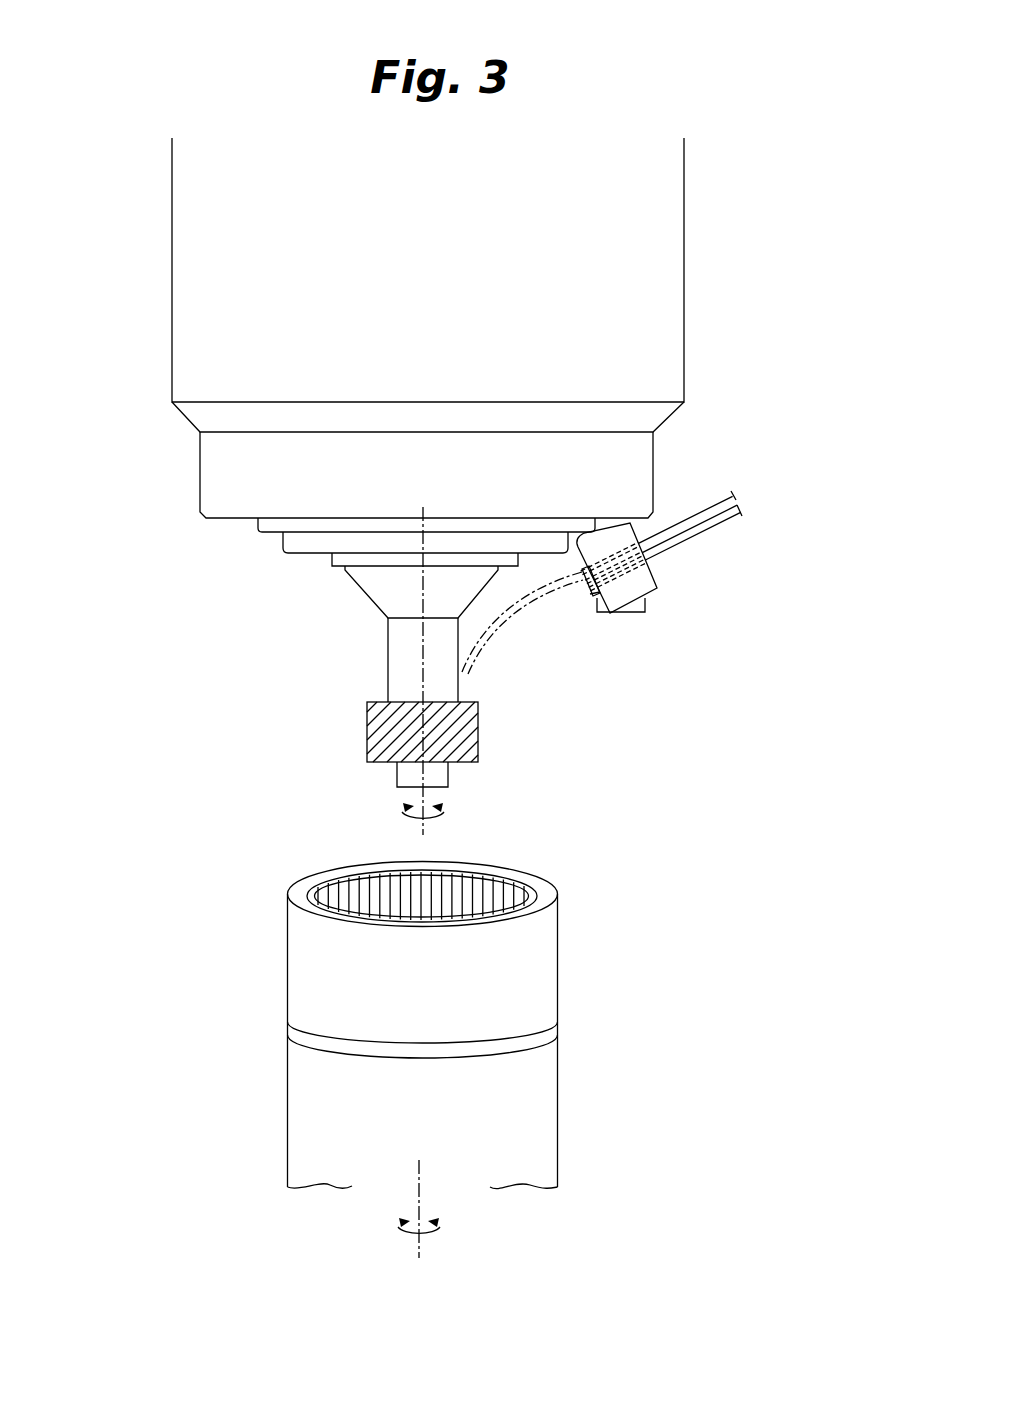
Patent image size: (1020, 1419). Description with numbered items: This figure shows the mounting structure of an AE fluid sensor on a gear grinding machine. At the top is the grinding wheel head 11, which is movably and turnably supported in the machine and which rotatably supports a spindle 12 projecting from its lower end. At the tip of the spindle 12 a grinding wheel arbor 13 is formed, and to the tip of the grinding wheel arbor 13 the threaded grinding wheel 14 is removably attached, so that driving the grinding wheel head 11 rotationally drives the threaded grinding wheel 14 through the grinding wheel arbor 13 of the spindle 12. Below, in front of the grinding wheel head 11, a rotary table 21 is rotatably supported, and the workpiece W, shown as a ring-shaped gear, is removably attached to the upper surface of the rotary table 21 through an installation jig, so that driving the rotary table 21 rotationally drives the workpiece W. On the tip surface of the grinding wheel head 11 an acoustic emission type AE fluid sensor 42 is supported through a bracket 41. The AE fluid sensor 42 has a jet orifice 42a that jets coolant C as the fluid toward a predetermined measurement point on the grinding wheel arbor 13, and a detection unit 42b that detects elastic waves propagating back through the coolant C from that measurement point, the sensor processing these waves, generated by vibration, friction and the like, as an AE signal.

The grinding wheel head 11 is at (200, 480).
The spindle 12 is at (283, 546).
The grinding wheel arbor 13 is at (388, 661).
The threaded grinding wheel 14 is at (367, 731).
The rotary table 21 is at (558, 1096).
The bracket 41 is at (640, 612).
The AE fluid sensor 42 is at (655, 590).
The jet orifice 42a is at (582, 573).
The detection unit 42b is at (583, 595).
The coolant C is at (490, 640).
The workpiece W is at (558, 950).